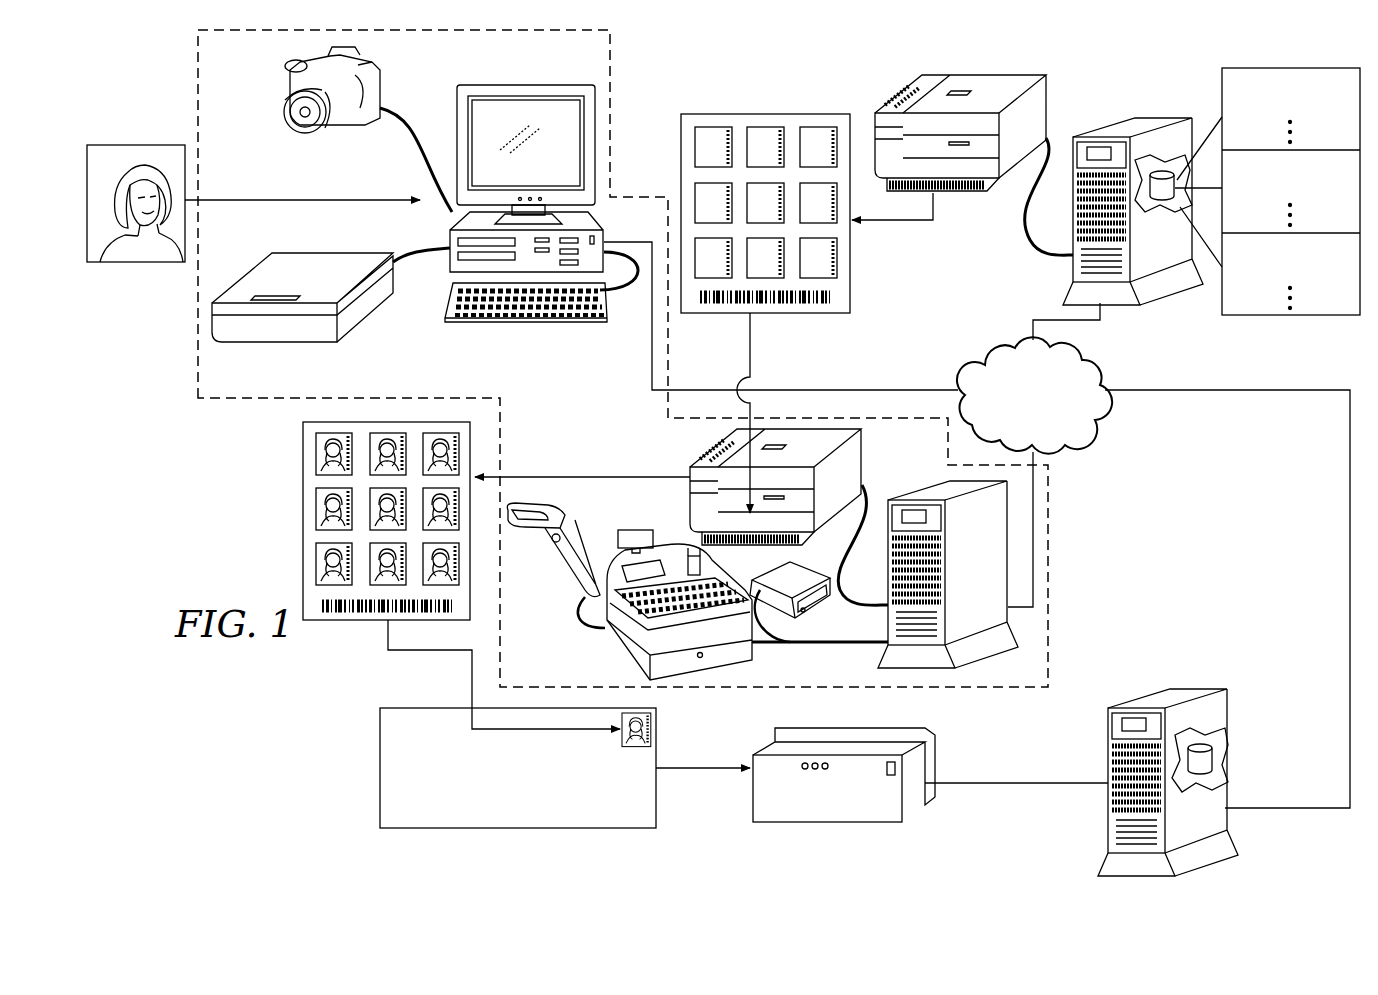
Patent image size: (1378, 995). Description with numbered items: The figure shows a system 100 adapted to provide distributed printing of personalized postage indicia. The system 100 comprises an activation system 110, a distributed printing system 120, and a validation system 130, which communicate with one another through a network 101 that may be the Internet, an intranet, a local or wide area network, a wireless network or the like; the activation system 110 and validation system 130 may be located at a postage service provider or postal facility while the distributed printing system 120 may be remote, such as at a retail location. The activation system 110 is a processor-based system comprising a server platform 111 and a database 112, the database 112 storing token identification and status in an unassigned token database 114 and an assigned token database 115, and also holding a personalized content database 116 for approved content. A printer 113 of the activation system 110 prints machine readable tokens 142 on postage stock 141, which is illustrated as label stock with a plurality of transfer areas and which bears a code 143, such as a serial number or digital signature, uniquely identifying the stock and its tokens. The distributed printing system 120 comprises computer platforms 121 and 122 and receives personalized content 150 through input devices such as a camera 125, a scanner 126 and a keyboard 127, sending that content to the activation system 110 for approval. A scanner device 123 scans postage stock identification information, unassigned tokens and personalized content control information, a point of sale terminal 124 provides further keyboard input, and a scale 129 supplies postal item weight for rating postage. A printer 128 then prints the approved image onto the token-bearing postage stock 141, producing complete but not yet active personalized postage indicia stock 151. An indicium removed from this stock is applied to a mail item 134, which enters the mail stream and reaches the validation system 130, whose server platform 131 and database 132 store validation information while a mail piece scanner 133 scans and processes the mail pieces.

The system 100 is at (300, 690).
The network 101 is at (1034, 395).
The activation system 110 is at (1177, 209).
The server platform 111 is at (1073, 262).
The database 112 is at (1160, 172).
The printer 113 is at (1020, 83).
The unassigned token database 114 is at (1295, 113).
The assigned token database 115 is at (1301, 193).
The personalized content database 116 is at (1291, 276).
The distributed printing system 120 is at (220, 400).
The computer platform 121 is at (948, 574).
The computer platform 122 is at (600, 218).
The scanner device 123 is at (578, 578).
The point of sale terminal 124 is at (637, 656).
The camera 125 is at (381, 72).
The scanner 126 is at (300, 342).
The keyboard 127 is at (456, 320).
The printer 128 is at (862, 447).
The scale 129 is at (789, 572).
The validation system 130 is at (1177, 776).
The server platform 131 is at (1108, 838).
The database 132 is at (1213, 762).
The mail piece scanner 133 is at (882, 822).
The mail item 134 is at (380, 757).
The postage stock 141 is at (771, 215).
The machine readable tokens 142 is at (712, 147).
The code 143 is at (838, 296).
The personalized content 150 is at (141, 263).
The personalized postage indicia stock 151 is at (303, 463).